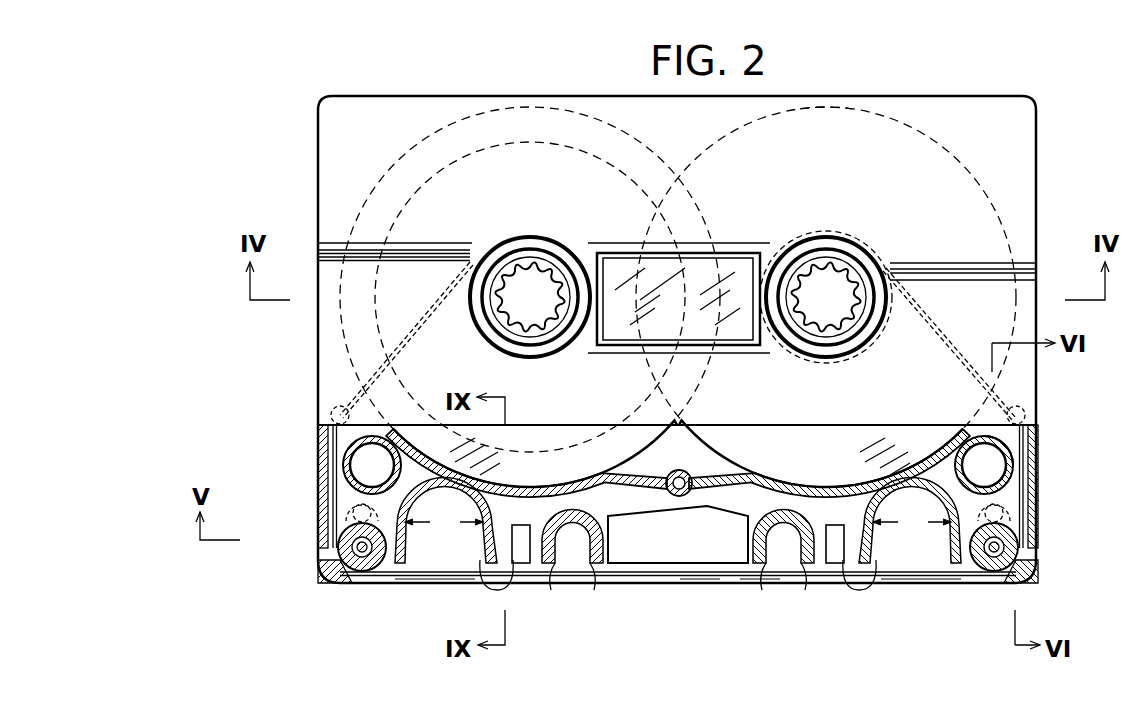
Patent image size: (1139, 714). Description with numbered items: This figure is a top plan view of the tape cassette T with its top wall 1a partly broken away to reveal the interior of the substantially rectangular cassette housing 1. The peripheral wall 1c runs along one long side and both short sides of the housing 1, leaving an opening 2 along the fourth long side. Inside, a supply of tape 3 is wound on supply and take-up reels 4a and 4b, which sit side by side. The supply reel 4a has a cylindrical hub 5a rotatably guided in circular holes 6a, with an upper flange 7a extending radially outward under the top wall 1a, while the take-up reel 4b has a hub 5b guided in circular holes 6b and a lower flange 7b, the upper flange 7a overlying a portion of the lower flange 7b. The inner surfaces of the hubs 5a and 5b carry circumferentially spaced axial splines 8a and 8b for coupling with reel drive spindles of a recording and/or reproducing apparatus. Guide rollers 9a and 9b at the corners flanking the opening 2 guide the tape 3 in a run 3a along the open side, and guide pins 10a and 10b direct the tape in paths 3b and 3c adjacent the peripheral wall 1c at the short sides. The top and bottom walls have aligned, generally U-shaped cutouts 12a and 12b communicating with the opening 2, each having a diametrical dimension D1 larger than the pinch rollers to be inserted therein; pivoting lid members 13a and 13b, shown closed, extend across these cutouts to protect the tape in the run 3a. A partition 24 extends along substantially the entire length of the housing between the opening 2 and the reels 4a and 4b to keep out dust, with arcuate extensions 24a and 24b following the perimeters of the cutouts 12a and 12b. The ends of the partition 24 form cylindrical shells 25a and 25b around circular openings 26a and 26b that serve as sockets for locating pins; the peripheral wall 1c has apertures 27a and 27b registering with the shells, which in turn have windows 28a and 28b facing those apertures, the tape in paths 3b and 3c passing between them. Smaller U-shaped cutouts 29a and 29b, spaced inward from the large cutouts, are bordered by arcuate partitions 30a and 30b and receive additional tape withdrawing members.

The cassette housing 1 is at (849, 103).
The top wall 1a is at (944, 108).
The peripheral wall 1c is at (1073, 454).
The tape cassette T is at (894, 104).
The opening 2 is at (662, 580).
The tape 3 is at (540, 436).
The run 3a is at (700, 578).
The path 3b is at (346, 544).
The path 3c is at (1010, 532).
The supply reel 4a is at (479, 124).
The take-up reel 4b is at (839, 103).
The cylindrical hub 5a is at (501, 250).
The cylindrical hub 5b is at (910, 251).
The circular holes 6a is at (534, 252).
The circular holes 6b is at (824, 252).
The upper flange 7a is at (536, 140).
The lower flange 7b is at (958, 158).
The splines 8a is at (497, 300).
The splines 8b is at (858, 326).
The guide roller 9a is at (366, 572).
The guide roller 9b is at (994, 572).
The guide pin 10a is at (331, 416).
The guide pin 10b is at (1086, 432).
The U-shaped cutout 12a is at (491, 573).
The U-shaped cutout 12b is at (866, 573).
The lid member 13a is at (418, 577).
The lid member 13b is at (938, 577).
The partition 24 is at (669, 480).
The arcuate extension 24a is at (500, 574).
The arcuate extension 24b is at (856, 574).
The cylindrical shell 25a is at (333, 440).
The cylindrical shell 25b is at (1016, 428).
The circular opening 26a is at (352, 465).
The circular opening 26b is at (1006, 468).
The aperture 27a is at (346, 483).
The aperture 27b is at (1012, 488).
The window 28a is at (330, 525).
The window 28b is at (1012, 455).
The small U-shaped cutout 29a is at (568, 573).
The small U-shaped cutout 29b is at (784, 573).
The arcuate partition 30a is at (622, 566).
The arcuate partition 30b is at (800, 577).
The diametrical dimension D1 is at (678, 526).